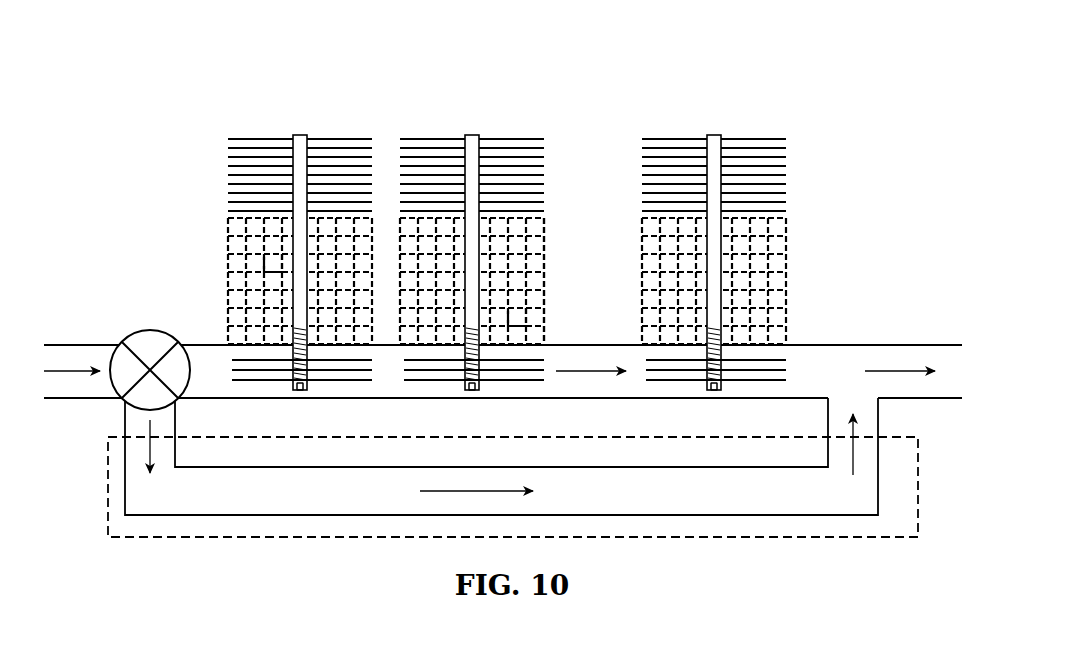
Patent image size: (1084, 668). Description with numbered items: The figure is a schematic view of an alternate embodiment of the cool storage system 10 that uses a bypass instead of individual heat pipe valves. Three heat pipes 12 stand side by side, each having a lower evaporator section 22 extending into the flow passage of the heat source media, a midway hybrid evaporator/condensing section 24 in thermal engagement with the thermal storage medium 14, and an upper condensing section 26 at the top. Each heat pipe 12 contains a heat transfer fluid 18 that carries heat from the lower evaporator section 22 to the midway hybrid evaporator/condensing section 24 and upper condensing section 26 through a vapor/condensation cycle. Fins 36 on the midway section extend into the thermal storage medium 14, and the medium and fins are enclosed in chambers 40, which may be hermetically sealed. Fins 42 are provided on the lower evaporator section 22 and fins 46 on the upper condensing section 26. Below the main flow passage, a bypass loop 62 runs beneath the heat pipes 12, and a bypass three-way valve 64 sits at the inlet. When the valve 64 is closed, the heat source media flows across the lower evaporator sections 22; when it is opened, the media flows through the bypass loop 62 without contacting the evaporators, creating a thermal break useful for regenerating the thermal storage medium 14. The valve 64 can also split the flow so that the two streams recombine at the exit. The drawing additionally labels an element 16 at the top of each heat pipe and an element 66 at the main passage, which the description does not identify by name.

The cool storage system 10 is at (672, 70).
The heat pipe 12 is at (322, 171).
The thermal storage medium 14 is at (546, 227).
The heat pipe 16 is at (473, 133).
The heat transfer fluid 18 is at (300, 392).
The lower evaporator section 22 is at (292, 376).
The midway hybrid evaporator/condensing section 24 is at (292, 260).
The upper condensing section 26 is at (299, 168).
The fins 36 is at (522, 325).
The chambers 40 is at (548, 262).
The fins 42 is at (525, 381).
The fins 46 is at (498, 140).
The bypass loop 62 is at (216, 541).
The bypass three-way valve 64 is at (118, 394).
The flow channel 66 is at (860, 345).